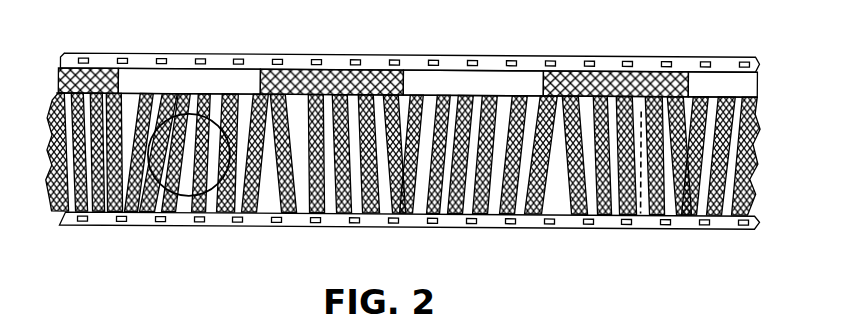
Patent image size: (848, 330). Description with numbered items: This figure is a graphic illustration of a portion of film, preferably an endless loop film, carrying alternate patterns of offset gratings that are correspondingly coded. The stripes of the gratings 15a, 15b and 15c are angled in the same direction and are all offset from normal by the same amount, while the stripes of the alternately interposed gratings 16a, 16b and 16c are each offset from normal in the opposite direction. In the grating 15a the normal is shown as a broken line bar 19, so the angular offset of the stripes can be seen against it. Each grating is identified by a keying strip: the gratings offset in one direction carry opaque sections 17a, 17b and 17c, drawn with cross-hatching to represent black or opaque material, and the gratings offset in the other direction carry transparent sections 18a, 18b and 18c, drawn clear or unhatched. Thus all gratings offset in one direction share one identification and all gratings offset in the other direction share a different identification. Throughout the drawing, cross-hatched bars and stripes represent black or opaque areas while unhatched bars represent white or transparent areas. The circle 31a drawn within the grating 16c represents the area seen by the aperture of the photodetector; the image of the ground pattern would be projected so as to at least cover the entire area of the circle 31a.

The grating 15a is at (618, 205).
The grating 15b is at (337, 213).
The grating 15c is at (64, 226).
The grating 16a is at (702, 205).
The grating 16b is at (443, 210).
The grating 16c is at (150, 212).
The opaque keying section 17a is at (608, 72).
The opaque keying section 17b is at (295, 73).
The opaque keying section 17c is at (100, 73).
The transparent keying section 18a is at (723, 82).
The transparent keying section 18b is at (452, 78).
The transparent keying section 18c is at (182, 75).
The broken line bar 19 is at (644, 212).
The circle 31a is at (184, 206).